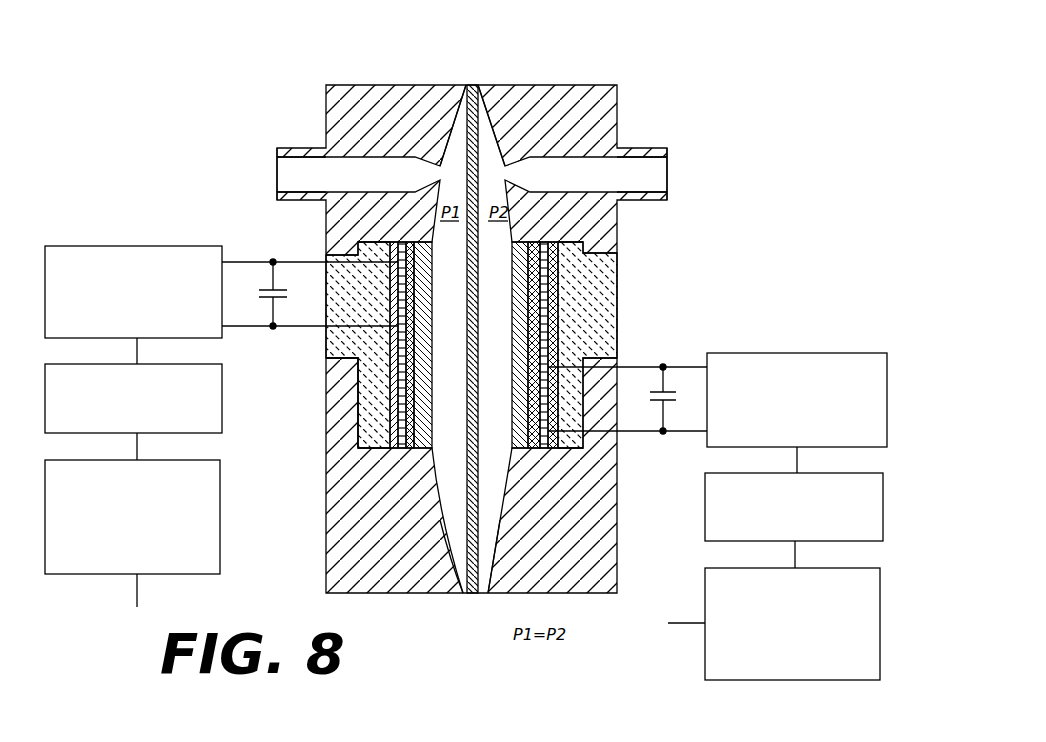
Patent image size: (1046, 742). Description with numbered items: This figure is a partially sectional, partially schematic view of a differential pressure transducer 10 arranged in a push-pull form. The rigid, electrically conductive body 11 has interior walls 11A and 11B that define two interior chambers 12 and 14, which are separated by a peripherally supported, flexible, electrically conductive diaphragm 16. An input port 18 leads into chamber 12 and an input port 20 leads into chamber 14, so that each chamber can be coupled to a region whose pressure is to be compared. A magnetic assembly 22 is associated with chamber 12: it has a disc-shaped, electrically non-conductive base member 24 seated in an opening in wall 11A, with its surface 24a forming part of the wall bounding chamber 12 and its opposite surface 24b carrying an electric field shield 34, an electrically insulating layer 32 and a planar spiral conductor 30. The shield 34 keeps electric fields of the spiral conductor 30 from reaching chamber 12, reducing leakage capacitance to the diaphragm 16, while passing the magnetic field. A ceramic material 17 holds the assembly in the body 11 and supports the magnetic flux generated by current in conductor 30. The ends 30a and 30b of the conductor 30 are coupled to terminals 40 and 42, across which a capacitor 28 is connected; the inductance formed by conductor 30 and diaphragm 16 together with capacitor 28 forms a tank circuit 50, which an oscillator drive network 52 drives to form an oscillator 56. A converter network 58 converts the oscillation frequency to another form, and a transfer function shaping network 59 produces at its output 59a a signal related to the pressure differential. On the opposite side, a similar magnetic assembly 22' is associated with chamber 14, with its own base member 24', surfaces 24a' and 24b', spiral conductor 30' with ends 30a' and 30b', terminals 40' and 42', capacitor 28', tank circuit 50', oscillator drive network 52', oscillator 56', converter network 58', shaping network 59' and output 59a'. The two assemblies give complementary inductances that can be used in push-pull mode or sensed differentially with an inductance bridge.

The transducer 10 is at (597, 49).
The body 11 is at (617, 230).
The interior wall 11A is at (455, 590).
The interior wall 11B is at (486, 595).
The interior chamber 12 is at (466, 115).
The interior chamber 14 is at (484, 105).
The diaphragm 16 is at (490, 112).
The ceramic material 17 is at (326, 380).
The input port 18 is at (278, 172).
The input port 20 is at (667, 172).
The magnetic assembly 22 is at (301, 483).
The magnetic assembly 22' is at (615, 482).
The base member 24 is at (428, 345).
The surface 24a is at (428, 345).
The surface 24b is at (437, 345).
The electrode 24' is at (510, 345).
The electrode layer 24a' is at (599, 344).
The electrode layer 24b' is at (612, 345).
The capacitor 28 is at (258, 294).
The capacitor 28' is at (676, 399).
The spiral shaped electrical conductor 30 is at (339, 345).
The end 30a is at (339, 390).
The end 30b is at (338, 262).
The insulator 30' is at (612, 345).
The insulator layer 30a' is at (610, 302).
The insulator layer 30b' is at (610, 455).
The electrically insulating layer 32 is at (326, 510).
The electric field shield 34 is at (326, 538).
The terminal 40 is at (310, 248).
The terminal 42 is at (310, 332).
The conductor lead 40' is at (627, 356).
The conductor lead 42' is at (627, 446).
The tank circuit 50 is at (240, 108).
The sensing capacitor section 50' is at (687, 117).
The oscillator drive network 52 is at (133, 275).
The oscillator drive network 52' is at (797, 382).
The oscillator 56 is at (126, 111).
The electronic circuit 56' is at (800, 120).
The converter network 58 is at (151, 385).
The converter network 58' is at (772, 494).
The transfer function shaping network 59 is at (152, 503).
The transfer function shaping network 59' is at (767, 610).
The output 59a is at (168, 590).
The output signal line 59a' is at (666, 608).